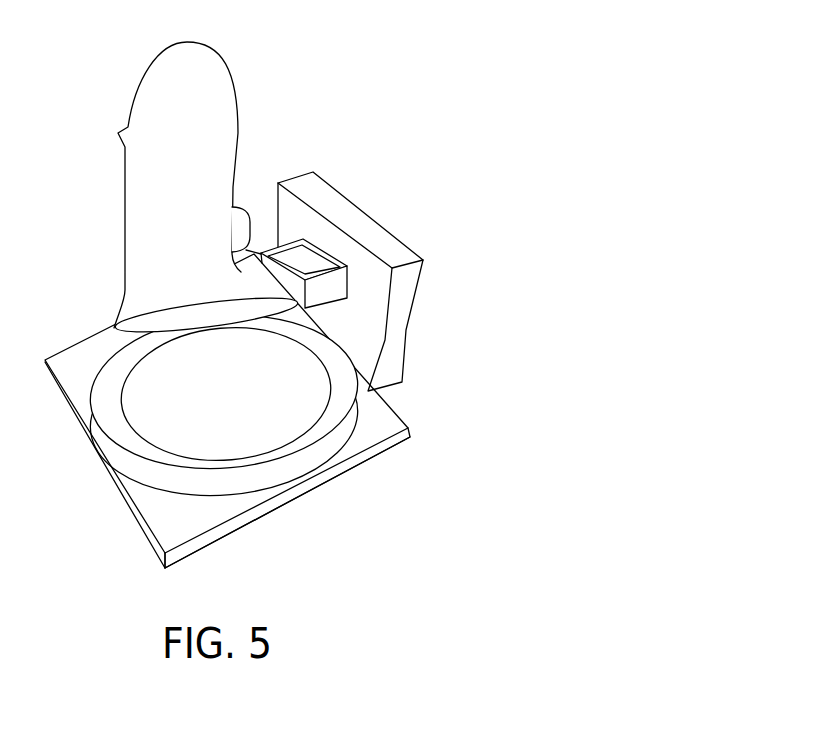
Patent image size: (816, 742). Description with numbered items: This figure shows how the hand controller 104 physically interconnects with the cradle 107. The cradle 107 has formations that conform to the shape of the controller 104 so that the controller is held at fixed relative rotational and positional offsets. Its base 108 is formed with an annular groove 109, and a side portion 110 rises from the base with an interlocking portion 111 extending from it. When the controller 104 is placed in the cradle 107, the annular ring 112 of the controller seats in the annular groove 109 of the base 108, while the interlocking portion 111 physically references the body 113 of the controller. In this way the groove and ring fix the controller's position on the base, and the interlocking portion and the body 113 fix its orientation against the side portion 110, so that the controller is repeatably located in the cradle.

The hand controller 104 is at (218, 68).
The cradle 107 is at (432, 247).
The base 108 is at (403, 412).
The annular groove 109 is at (327, 478).
The side portion 110 is at (373, 238).
The interlocking portion 111 is at (303, 253).
The annular ring 112 is at (148, 463).
The body 113 is at (197, 298).